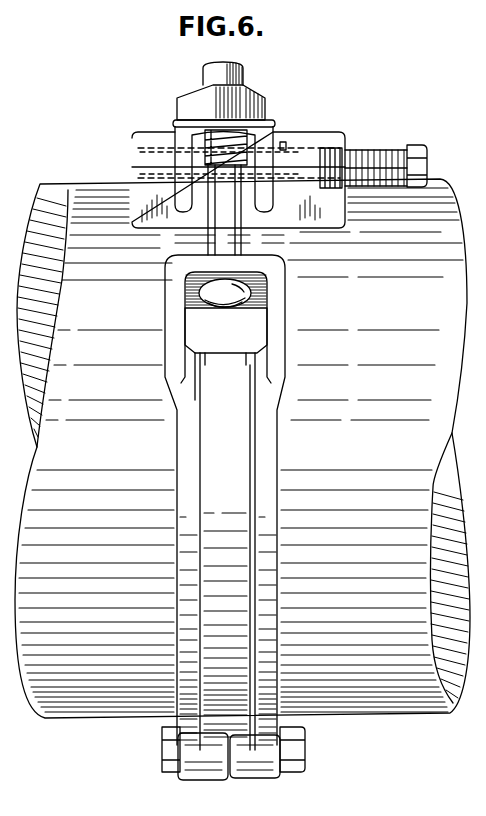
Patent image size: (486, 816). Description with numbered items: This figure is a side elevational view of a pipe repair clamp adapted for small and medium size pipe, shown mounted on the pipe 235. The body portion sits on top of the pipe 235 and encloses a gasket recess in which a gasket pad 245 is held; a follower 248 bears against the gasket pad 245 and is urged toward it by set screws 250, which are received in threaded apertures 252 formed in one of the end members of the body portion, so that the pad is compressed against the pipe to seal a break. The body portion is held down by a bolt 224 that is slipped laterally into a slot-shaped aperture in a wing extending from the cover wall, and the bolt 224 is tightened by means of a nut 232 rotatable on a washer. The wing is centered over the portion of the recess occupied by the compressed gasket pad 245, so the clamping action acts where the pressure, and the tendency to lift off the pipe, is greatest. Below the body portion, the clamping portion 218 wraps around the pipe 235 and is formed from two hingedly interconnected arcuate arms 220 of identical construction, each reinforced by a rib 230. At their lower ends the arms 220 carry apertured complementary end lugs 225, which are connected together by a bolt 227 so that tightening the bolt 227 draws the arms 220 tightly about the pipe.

The pipe 235 is at (87, 186).
The nut 232 is at (186, 108).
The bolt 224 is at (243, 243).
The gasket pad 245 is at (283, 142).
The follower 248 is at (302, 155).
The threaded aperture 252 is at (348, 139).
The set screw 250 is at (416, 146).
The clamping portion 218 is at (176, 444).
The arcuate arm 220 is at (267, 427).
The rib 230 is at (240, 468).
The end lug 225 is at (190, 772).
The bolt 227 is at (307, 748).